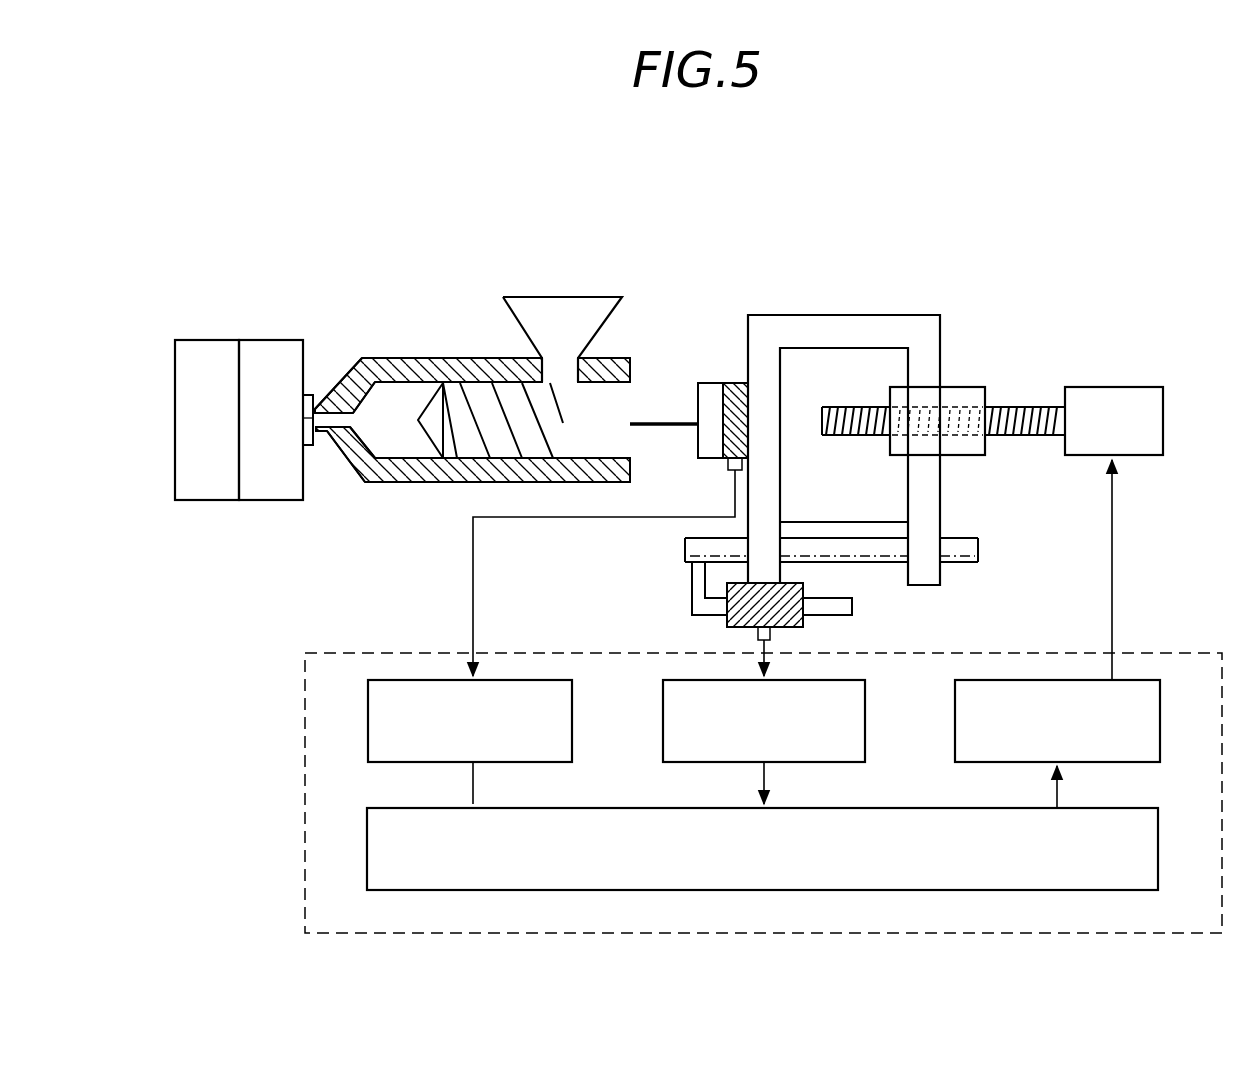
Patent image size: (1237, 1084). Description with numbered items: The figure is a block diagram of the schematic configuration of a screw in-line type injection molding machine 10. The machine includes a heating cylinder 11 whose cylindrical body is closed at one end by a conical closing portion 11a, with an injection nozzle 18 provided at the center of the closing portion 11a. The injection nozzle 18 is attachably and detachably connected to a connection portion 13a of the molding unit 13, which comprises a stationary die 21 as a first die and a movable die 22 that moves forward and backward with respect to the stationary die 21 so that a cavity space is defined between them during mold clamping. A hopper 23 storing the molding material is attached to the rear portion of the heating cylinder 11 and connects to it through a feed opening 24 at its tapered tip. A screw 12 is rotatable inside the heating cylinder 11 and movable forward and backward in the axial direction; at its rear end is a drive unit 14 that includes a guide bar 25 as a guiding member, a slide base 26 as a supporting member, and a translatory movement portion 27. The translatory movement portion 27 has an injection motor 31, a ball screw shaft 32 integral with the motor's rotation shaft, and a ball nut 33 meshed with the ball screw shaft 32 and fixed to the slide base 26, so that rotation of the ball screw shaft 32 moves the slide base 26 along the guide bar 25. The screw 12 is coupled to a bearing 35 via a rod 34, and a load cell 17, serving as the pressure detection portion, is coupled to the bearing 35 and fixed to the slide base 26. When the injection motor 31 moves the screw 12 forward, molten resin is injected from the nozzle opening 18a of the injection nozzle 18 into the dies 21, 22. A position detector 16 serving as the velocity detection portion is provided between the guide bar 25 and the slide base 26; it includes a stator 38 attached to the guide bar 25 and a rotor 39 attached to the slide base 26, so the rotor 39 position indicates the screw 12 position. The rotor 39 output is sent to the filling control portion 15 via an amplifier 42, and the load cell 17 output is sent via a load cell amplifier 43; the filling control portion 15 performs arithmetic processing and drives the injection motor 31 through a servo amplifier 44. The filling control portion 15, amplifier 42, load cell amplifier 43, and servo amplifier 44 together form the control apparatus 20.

The injection molding machine 10 is at (704, 230).
The heating cylinder 11 is at (414, 368).
The closing portion 11a is at (352, 470).
The screw 12 is at (470, 448).
The molding unit 13 is at (188, 263).
The connection portion 13a is at (303, 424).
The drive unit 14 is at (845, 298).
The filling control portion 15 is at (367, 848).
The position detector 16 is at (676, 586).
The load cell 17 is at (740, 383).
The injection nozzle 18 is at (318, 397).
The nozzle opening 18a is at (340, 442).
The control apparatus 20 is at (305, 777).
The stationary die 21 is at (271, 350).
The movable die 22 is at (206, 350).
The hopper 23 is at (586, 297).
The feed opening 24 is at (560, 372).
The guide bar 25 is at (978, 550).
The slide base 26 is at (917, 323).
The translatory movement portion 27 is at (968, 310).
The injection motor 31 is at (1110, 387).
The ball screw shaft 32 is at (1034, 405).
The ball nut 33 is at (960, 390).
The rod 34 is at (663, 430).
The bearing 35 is at (710, 383).
The stator 38 is at (852, 607).
The rotor 39 is at (727, 619).
The amplifier 42 is at (663, 724).
The load cell amplifier 43 is at (368, 720).
The servo amplifier 44 is at (955, 722).